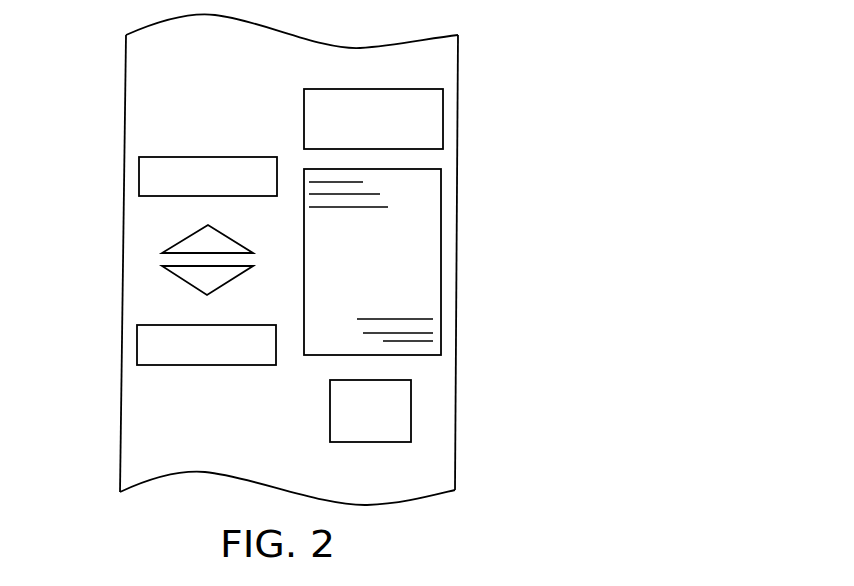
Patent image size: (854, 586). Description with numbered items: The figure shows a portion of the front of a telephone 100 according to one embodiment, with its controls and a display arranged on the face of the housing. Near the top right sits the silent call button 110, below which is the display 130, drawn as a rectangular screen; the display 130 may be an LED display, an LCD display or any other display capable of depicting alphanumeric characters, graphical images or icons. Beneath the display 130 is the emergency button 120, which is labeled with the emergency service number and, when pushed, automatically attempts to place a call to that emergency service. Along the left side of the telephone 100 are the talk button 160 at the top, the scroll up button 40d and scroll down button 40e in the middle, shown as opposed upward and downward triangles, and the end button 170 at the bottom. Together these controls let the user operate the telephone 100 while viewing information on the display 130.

The telephone 100 is at (375, 58).
The silent call button 110 is at (417, 123).
The 911 button 120 is at (402, 408).
The display 130 is at (420, 262).
The talk button 160 is at (158, 172).
The end button 170 is at (157, 341).
The scroll up button 40d is at (193, 242).
The scroll down button 40e is at (195, 275).